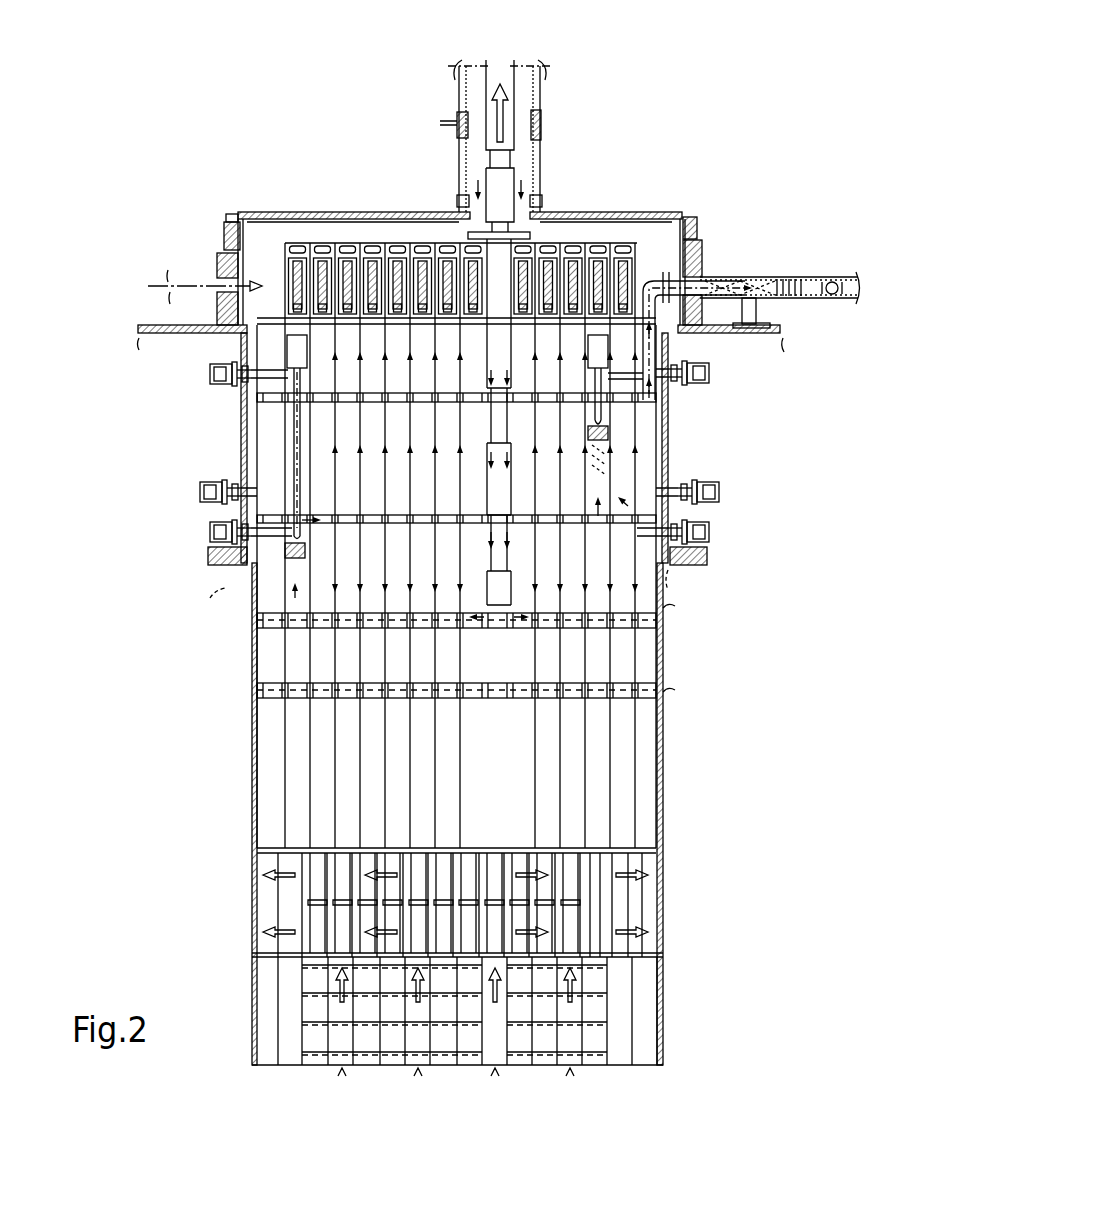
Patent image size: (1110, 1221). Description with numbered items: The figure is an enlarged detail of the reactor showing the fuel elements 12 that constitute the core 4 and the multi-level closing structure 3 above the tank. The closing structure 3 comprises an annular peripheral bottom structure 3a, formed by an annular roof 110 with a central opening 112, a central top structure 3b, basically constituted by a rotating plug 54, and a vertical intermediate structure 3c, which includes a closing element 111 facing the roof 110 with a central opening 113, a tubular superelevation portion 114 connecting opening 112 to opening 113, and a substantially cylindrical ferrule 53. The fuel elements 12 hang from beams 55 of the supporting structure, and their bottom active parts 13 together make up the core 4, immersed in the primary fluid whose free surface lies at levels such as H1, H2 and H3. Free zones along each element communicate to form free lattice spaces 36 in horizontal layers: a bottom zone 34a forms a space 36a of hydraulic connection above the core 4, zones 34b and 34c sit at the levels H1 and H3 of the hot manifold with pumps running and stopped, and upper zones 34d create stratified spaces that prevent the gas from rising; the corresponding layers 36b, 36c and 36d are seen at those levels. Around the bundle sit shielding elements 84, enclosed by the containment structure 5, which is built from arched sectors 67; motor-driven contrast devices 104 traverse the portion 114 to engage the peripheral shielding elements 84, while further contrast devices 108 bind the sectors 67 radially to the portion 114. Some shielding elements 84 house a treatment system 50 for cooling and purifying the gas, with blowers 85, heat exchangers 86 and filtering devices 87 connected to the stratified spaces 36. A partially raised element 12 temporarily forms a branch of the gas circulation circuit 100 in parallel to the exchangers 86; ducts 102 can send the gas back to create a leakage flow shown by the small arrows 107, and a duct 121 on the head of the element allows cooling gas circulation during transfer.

The duct 121 is at (541, 94).
The fuel element 12 is at (519, 186).
The small arrows 107 is at (563, 345).
The plug 54 is at (622, 214).
The central top structure 3b is at (657, 214).
The ferrule 53 is at (702, 256).
The duct 102 is at (748, 278).
The beam 55 is at (366, 270).
The closing element 111 is at (160, 326).
The central opening 113 is at (256, 334).
The tube sheet 36d is at (282, 398).
The tubular superelevation portion 114 is at (245, 447).
The free zone 34d is at (282, 513).
The contrast device 108 is at (200, 492).
The contrast device 104 is at (210, 532).
The closing structure 3 is at (246, 562).
The level H2 is at (245, 592).
The central opening 112 is at (248, 572).
The free zone 34c is at (330, 619).
The free zone 34b is at (327, 690).
The circuit 100 is at (488, 624).
The circulation device 85 is at (640, 411).
The filtering device 87 is at (676, 433).
The heat exchanger 86 is at (608, 436).
The shielding element 84 is at (618, 497).
The vertical intermediate structure 3c is at (674, 508).
The treatment system 50 is at (680, 533).
The free lattice space 36 is at (690, 560).
The peripheral bottom structure 3a is at (682, 577).
The annular roof 110 is at (683, 568).
The level H3 is at (670, 612).
The tube sheet 36c is at (611, 630).
The sector 67 is at (660, 667).
The level H1 is at (668, 700).
The tube sheet 36b is at (636, 694).
The structure 5 is at (662, 760).
The active part 13 is at (540, 1008).
The core 4 is at (567, 1036).
The space 36a is at (582, 874).
The bottom free zone 34a is at (355, 887).